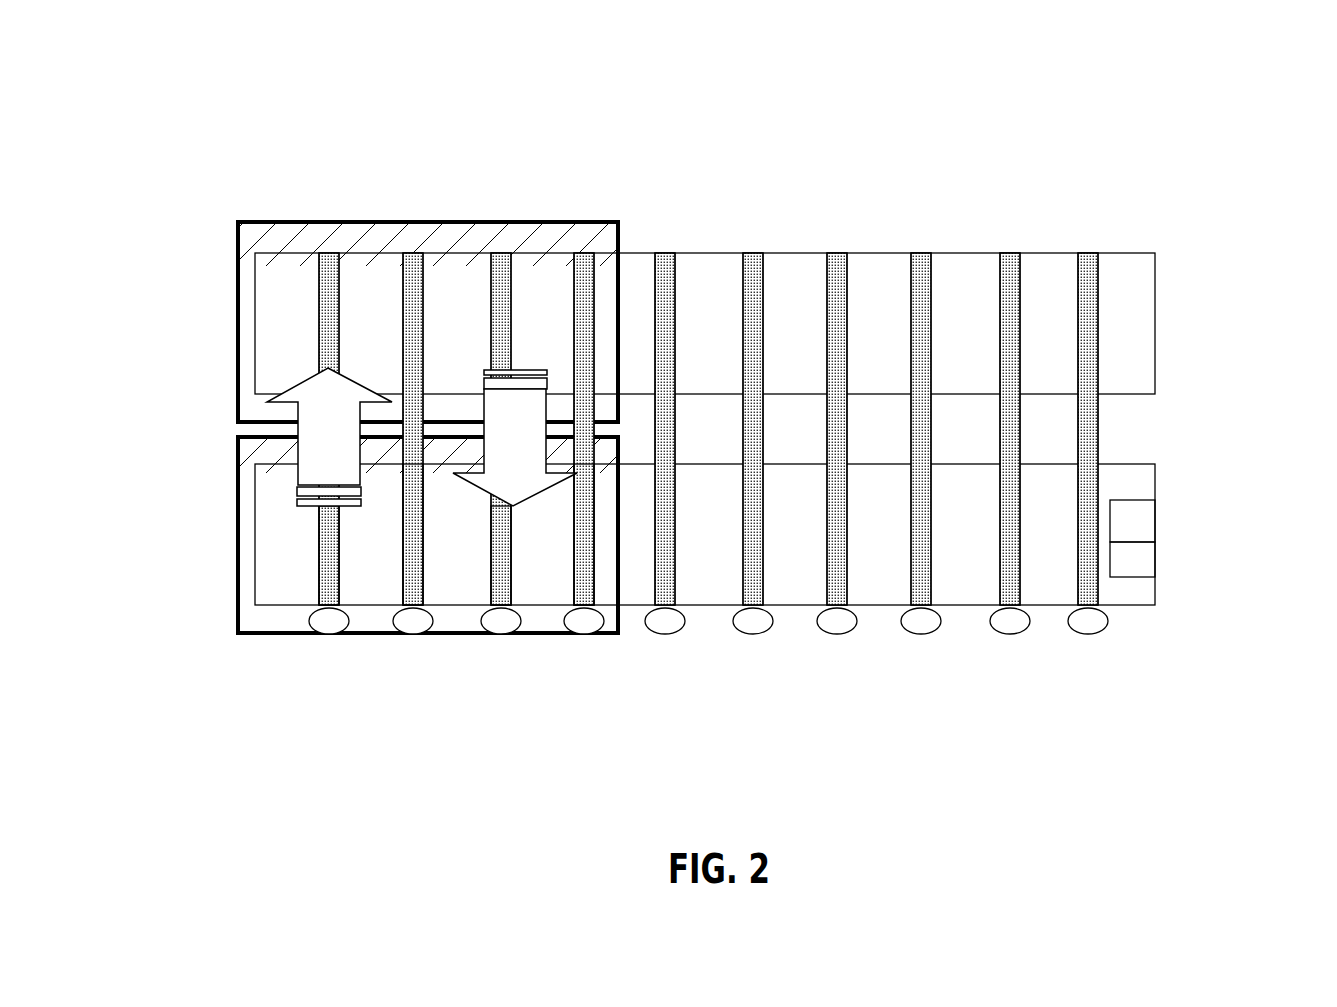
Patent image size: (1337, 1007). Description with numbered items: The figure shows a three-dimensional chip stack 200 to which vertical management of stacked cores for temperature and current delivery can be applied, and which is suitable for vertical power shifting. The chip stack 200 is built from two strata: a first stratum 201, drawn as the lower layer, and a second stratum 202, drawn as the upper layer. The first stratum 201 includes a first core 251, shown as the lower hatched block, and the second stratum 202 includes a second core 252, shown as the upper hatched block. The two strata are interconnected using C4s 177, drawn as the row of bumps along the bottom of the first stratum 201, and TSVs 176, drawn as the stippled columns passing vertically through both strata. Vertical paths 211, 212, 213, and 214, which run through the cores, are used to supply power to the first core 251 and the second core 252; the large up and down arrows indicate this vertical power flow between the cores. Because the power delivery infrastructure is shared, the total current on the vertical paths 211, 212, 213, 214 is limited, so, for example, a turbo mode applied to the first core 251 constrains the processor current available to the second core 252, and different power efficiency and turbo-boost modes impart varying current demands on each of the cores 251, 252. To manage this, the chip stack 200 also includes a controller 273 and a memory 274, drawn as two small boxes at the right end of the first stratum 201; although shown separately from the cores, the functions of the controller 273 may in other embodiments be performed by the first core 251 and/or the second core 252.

The 3D chip stack 200 is at (760, 43).
The TSVs 176 is at (1088, 253).
The C4s 177 is at (1088, 634).
The stratum-2 202 is at (1195, 322).
The stratum-1 201 is at (1195, 529).
The core-2 252 is at (236, 232).
The core-1 251 is at (236, 445).
The vertical path 211 is at (310, 521).
The vertical path 212 is at (397, 546).
The vertical path 213 is at (480, 566).
The vertical path 214 is at (561, 556).
The controller 273 is at (1152, 515).
The memory 274 is at (1152, 562).